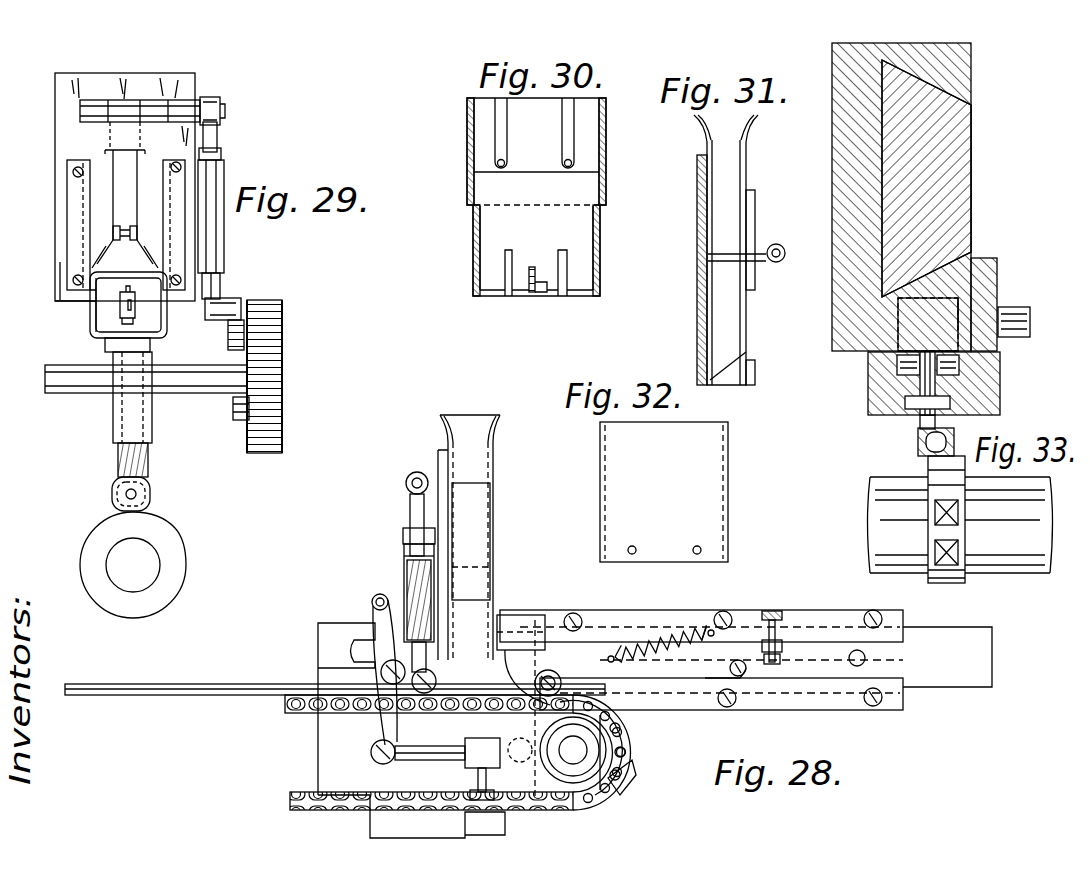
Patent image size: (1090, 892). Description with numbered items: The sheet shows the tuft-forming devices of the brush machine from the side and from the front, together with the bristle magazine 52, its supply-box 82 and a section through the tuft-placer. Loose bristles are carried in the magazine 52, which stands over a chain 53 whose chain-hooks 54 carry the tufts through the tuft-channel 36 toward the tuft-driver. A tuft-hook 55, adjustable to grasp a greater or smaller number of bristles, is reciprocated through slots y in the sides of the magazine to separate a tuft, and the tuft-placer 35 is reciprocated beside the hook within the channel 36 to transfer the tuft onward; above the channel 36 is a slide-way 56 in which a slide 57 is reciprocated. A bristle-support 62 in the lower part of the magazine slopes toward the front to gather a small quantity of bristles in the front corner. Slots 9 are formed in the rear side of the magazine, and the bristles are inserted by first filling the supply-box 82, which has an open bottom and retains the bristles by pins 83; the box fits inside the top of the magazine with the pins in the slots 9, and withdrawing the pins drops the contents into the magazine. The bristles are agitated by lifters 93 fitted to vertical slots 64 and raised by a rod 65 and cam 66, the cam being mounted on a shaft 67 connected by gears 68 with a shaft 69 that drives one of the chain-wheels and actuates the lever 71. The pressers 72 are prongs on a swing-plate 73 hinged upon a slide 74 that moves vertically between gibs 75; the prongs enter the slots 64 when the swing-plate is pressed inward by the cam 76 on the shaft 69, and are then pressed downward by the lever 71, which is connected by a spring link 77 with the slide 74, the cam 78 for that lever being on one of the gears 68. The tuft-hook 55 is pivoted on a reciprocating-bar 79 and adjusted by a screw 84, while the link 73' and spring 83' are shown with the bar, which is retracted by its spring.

In FIG. 30, the slots 9 is at (563, 134).
In FIG. 33, the tuft-placer 35 is at (936, 388).
In FIG. 33, the tuft-channel 36 is at (906, 402).
In FIG. 28, the tuft-channel 36 is at (222, 684).
In FIG. 29, the magazine 52 is at (58, 97).
In FIG. 30, the magazine 52 is at (536, 197).
In FIG. 28, the magazine 52 is at (495, 528).
In FIG. 29, the chain 53 is at (161, 320).
In FIG. 33, the chain 53 is at (920, 440).
In FIG. 28, the chain 53 is at (298, 714).
In FIG. 33, the chain-hooks 54 is at (920, 418).
In FIG. 28, the chain-hooks 54 is at (320, 690).
In FIG. 29, the tuft-hook 55 is at (120, 300).
In FIG. 33, the slide-way 56 is at (905, 371).
In FIG. 33, the slide 57 is at (960, 338).
In FIG. 30, the bristle-support 62 is at (527, 280).
In FIG. 31, the bristle-support 62 is at (740, 372).
In FIG. 30, the slots 64 is at (505, 275).
In FIG. 29, the rod 65 is at (122, 372).
In FIG. 29, the cam 66 is at (178, 528).
In FIG. 29, the shaft 67 is at (160, 574).
In FIG. 29, the gears 68 is at (283, 417).
In FIG. 28, the shaft 69 is at (578, 750).
In FIG. 29, the lever 71 is at (228, 350).
In FIG. 28, the lever 71 is at (548, 660).
In FIG. 29, the pressers 72 is at (96, 278).
In FIG. 28, the pressers 72 is at (456, 672).
In FIG. 29, the swing-plate 73 is at (125, 195).
In FIG. 28, the link 73' is at (516, 660).
In FIG. 29, the slide 74 is at (80, 138).
In FIG. 28, the slide 74 is at (440, 470).
In FIG. 29, the gibs 75 is at (72, 217).
In FIG. 28, the cam 76 is at (625, 788).
In FIG. 29, the spring link 77 is at (219, 131).
In FIG. 28, the spring link 77 is at (410, 515).
In FIG. 29, the cam 78 is at (233, 413).
In FIG. 28, the reciprocating-bar 79 is at (947, 657).
In FIG. 31, the supply-box 82 is at (752, 145).
In FIG. 32, the supply-box 82 is at (664, 492).
In FIG. 28, the supply-box 82 is at (496, 453).
In FIG. 31, the pins 83 is at (761, 275).
In FIG. 32, the pins 83 is at (664, 534).
In FIG. 28, the spring 83' is at (661, 623).
In FIG. 28, the screw 84 is at (770, 611).
In FIG. 29, the lifters 93 is at (92, 313).
In FIG. 29, the slots y is at (140, 293).
In FIG. 30, the slots y is at (540, 293).